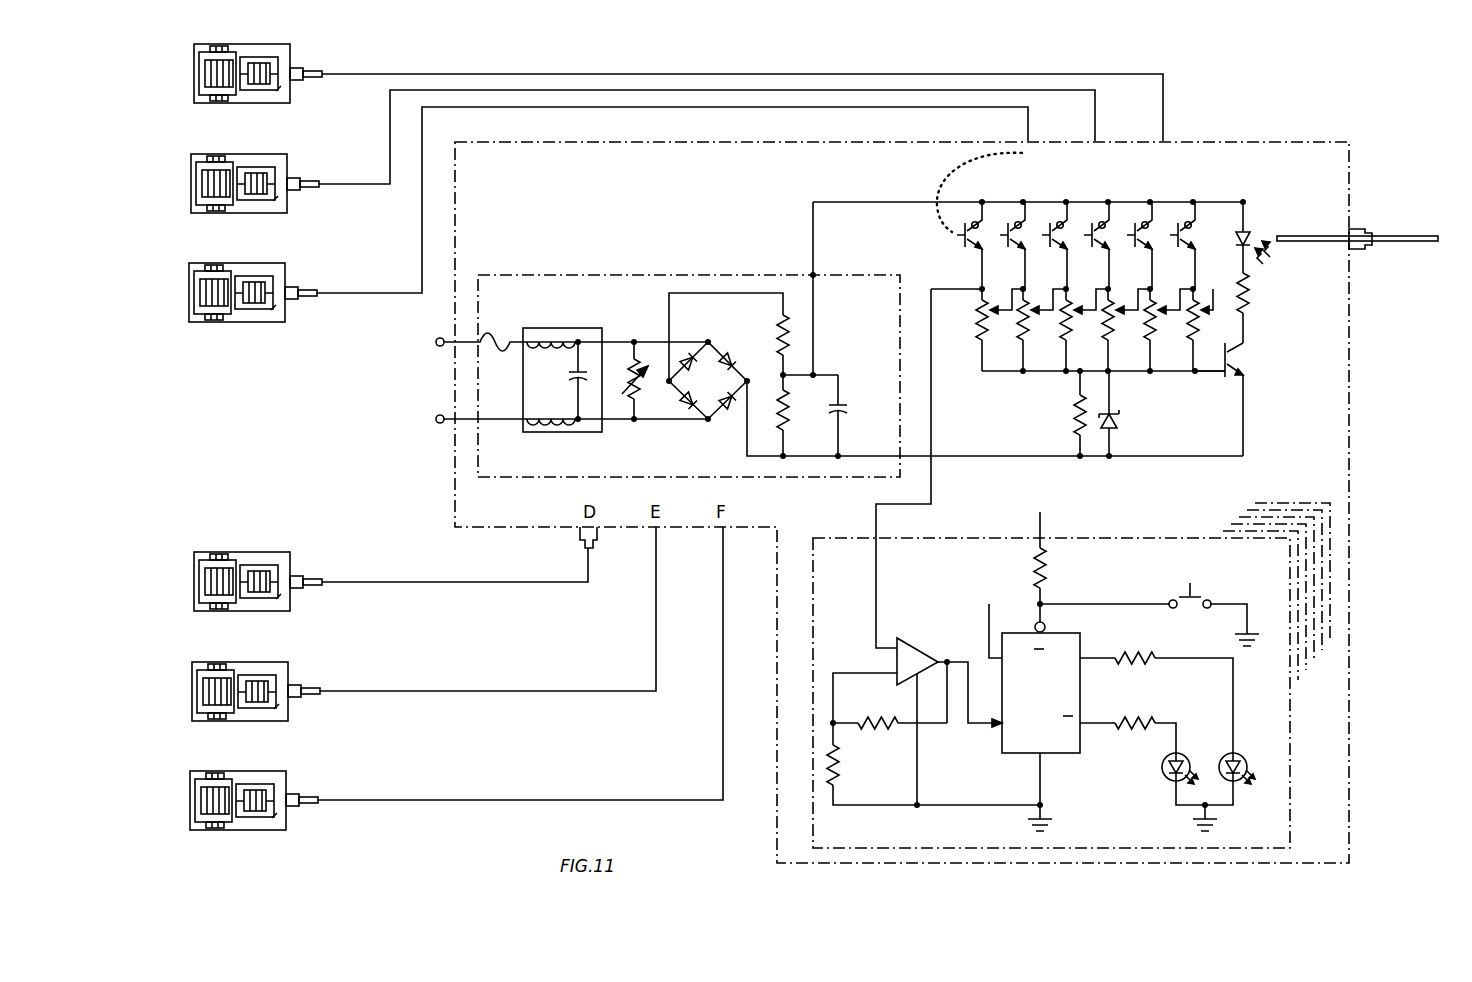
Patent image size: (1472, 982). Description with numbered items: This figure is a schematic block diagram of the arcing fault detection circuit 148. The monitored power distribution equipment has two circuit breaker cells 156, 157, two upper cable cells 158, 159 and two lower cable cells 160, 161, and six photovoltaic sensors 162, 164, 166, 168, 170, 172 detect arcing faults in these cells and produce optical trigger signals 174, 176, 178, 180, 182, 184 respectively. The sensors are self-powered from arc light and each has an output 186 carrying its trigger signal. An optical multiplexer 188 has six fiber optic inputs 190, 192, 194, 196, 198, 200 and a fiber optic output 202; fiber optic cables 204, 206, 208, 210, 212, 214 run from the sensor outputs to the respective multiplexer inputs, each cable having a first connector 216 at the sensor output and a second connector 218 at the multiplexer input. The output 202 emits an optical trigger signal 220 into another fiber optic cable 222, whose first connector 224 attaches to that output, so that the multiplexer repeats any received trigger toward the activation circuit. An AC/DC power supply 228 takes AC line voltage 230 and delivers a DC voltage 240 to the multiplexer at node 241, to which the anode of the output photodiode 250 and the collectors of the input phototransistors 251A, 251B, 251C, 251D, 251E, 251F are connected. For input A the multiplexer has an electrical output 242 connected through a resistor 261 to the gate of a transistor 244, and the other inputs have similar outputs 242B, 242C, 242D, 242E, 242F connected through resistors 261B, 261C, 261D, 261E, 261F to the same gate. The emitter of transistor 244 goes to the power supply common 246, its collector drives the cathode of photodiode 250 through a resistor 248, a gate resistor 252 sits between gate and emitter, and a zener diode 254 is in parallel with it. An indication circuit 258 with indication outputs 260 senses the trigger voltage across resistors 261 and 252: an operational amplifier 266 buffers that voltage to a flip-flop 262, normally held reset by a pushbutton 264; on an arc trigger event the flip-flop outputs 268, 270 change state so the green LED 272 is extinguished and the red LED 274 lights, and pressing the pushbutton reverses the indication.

The detection circuit 148 is at (262, 446).
The circuit breaker cell 156 is at (237, 89).
The circuit breaker cell 157 is at (214, 583).
The upper cable cell 158 is at (235, 199).
The upper cable cell 159 is at (235, 703).
The lower cable cell 160 is at (233, 308).
The lower cable cell 161 is at (231, 813).
The photovoltaic sensor 162 is at (225, 104).
The photovoltaic sensor 164 is at (222, 214).
The photovoltaic sensor 166 is at (220, 323).
The photovoltaic sensor 168 is at (225, 612).
The photovoltaic sensor 170 is at (222, 721).
The photovoltaic sensor 172 is at (220, 830).
The optical trigger signal 174 is at (283, 66).
The optical trigger signal 176 is at (281, 176).
The optical trigger signal 178 is at (279, 286).
The optical trigger signal 180 is at (284, 556).
The optical trigger signal 182 is at (281, 676).
The optical trigger signal 184 is at (277, 786).
The output 186 is at (292, 80).
The optical multiplexer 188 is at (918, 233).
The fiber optic input 190 is at (1163, 141).
The fiber optic input 192 is at (1095, 141).
The fiber optic input 194 is at (1028, 141).
The fiber optic input 196 is at (590, 530).
The fiber optic input 198 is at (658, 530).
The fiber optic input 200 is at (724, 530).
The fiber optic output 202 is at (1366, 236).
The fiber optic cable 204 is at (935, 74).
The fiber optic cable 206 is at (336, 190).
The fiber optic cable 208 is at (331, 297).
The fiber optic cable 210 is at (444, 578).
The fiber optic cable 212 is at (444, 688).
The fiber optic cable 214 is at (444, 797).
The first connector 216 is at (319, 585).
The second connector 218 is at (567, 546).
The optical trigger signal 220 is at (1274, 260).
The fiber optic cable 222 is at (1404, 236).
The first connector 224 is at (1356, 250).
The AC/DC power supply 228 is at (803, 339).
The AC line voltage 230 is at (423, 408).
The DC voltage 240 is at (814, 325).
The DC voltage node 241 is at (812, 273).
The electrical output 242 is at (982, 287).
The electrical output 242B is at (1023, 287).
The electrical output 242C is at (1065, 287).
The electrical output 242D is at (1107, 287).
The electrical output 242E is at (1150, 287).
The electrical output 242F is at (1193, 287).
The transistor 244 is at (1244, 352).
The common 246 is at (840, 454).
The resistor 248 is at (1248, 310).
The output photodiode 250 is at (1248, 236).
The input phototransistor 251A is at (973, 218).
The input phototransistor 251B is at (1015, 218).
The input phototransistor 251C is at (1058, 218).
The input phototransistor 251D is at (1099, 218).
The input phototransistor 251E is at (1143, 218).
The input phototransistor 251F is at (1184, 218).
The gate resistor 252 is at (1072, 432).
The zener diode 254 is at (1118, 432).
The indication circuit 258 is at (1322, 697).
The indication output 260 is at (1189, 775).
The resistor 261 is at (982, 326).
The resistor 261B is at (1023, 326).
The resistor 261C is at (1066, 326).
The resistor 261D is at (1108, 326).
The resistor 261E is at (1150, 326).
The resistor 261F is at (1193, 326).
The flip-flop 262 is at (1022, 754).
The pushbutton 264 is at (1207, 594).
The operational amplifier 266 is at (913, 657).
The flip-flop output 268 is at (1096, 664).
The flip-flop output 270 is at (1096, 728).
The green LED 272 is at (1184, 756).
The red LED 274 is at (1241, 756).